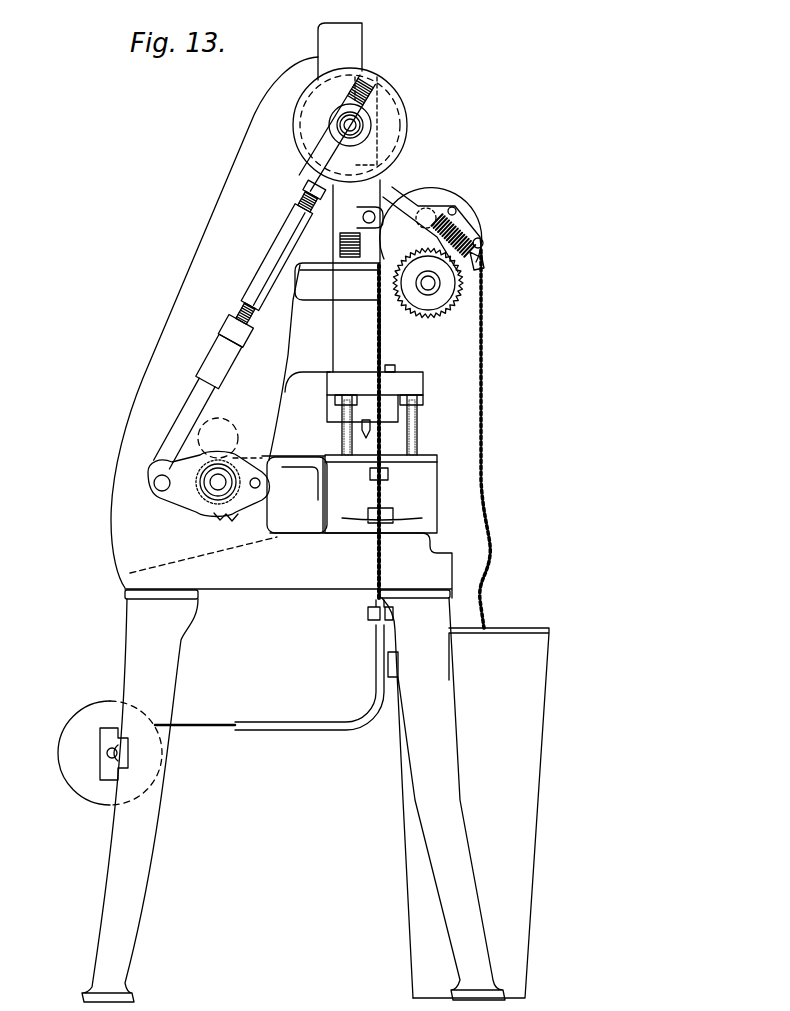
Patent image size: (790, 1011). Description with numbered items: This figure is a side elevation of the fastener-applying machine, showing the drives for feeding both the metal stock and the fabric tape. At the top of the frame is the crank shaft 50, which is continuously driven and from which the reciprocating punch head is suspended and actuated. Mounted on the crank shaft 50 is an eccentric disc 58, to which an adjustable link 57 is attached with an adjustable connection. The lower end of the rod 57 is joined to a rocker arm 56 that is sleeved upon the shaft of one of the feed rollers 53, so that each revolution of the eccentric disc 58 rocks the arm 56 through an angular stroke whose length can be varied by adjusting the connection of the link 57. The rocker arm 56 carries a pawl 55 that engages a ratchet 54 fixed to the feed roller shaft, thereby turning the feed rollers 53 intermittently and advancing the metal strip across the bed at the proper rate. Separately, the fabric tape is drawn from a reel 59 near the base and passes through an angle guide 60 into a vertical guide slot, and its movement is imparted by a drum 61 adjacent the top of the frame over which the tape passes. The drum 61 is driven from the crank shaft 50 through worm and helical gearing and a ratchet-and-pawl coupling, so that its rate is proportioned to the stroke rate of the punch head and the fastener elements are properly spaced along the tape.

The crank shaft 50 is at (378, 120).
The eccentric disc 58 is at (398, 150).
The drum 61 is at (443, 322).
The adjustable link 57 is at (204, 400).
The feed rollers 53 is at (228, 420).
The ratchet 54 is at (201, 504).
The rocker arm 56 is at (185, 488).
The pawl 55 is at (262, 490).
The angle guide 60 is at (308, 730).
The reel 59 is at (80, 772).